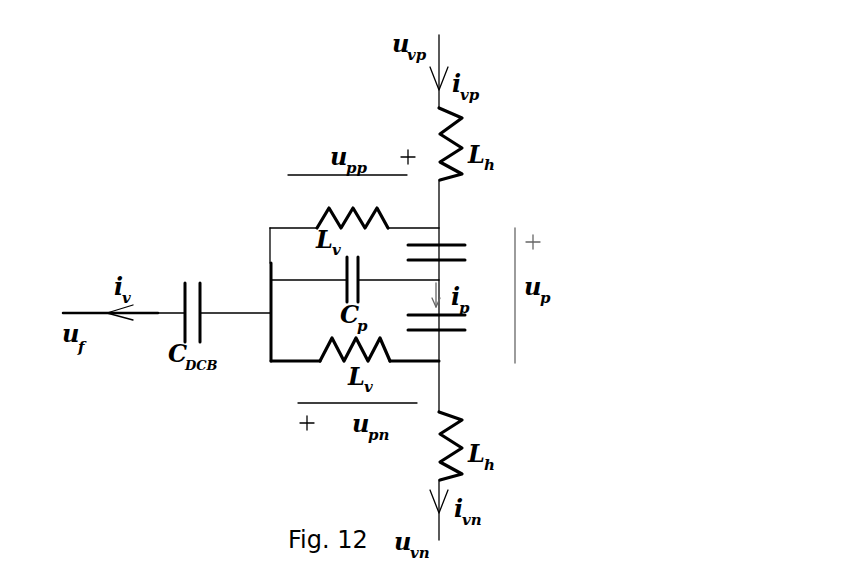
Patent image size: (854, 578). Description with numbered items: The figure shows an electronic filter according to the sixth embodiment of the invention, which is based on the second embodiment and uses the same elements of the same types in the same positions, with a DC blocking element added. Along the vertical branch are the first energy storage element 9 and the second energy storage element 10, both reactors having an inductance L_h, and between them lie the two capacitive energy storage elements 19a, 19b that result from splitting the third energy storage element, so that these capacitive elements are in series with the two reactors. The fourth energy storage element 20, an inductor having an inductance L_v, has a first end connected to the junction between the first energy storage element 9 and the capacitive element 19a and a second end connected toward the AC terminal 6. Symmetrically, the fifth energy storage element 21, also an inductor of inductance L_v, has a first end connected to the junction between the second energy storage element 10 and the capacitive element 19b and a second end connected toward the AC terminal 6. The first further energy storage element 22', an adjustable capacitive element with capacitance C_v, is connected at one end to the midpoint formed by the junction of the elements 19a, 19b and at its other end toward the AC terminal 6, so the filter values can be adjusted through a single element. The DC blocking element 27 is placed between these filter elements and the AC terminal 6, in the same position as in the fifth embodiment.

The AC terminal 6 is at (85, 312).
The DC blocking element 27 is at (187, 297).
The fourth energy storage element 20 is at (327, 210).
The fifth energy storage element 21 is at (320, 355).
The first further energy storage element 22' is at (321, 296).
The energy storage element 19a is at (437, 242).
The energy storage element 19b is at (467, 313).
The first energy storage element 9 is at (462, 116).
The second energy storage element 10 is at (456, 434).